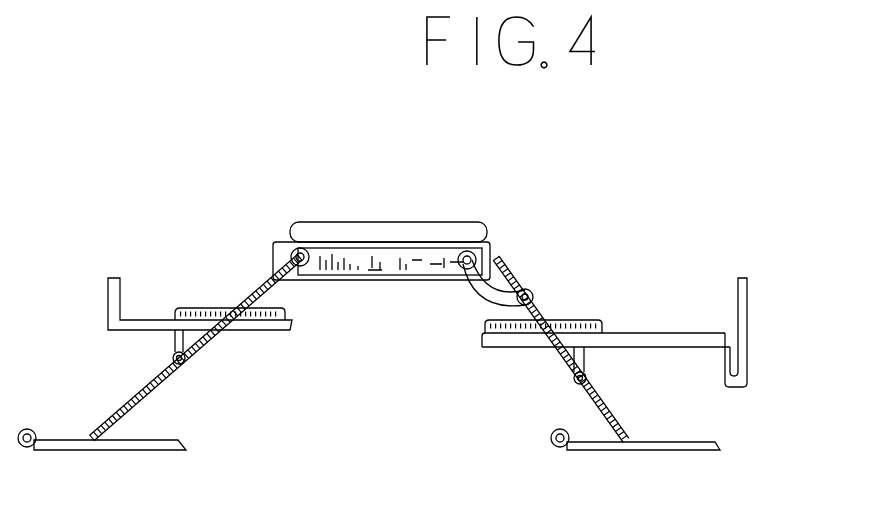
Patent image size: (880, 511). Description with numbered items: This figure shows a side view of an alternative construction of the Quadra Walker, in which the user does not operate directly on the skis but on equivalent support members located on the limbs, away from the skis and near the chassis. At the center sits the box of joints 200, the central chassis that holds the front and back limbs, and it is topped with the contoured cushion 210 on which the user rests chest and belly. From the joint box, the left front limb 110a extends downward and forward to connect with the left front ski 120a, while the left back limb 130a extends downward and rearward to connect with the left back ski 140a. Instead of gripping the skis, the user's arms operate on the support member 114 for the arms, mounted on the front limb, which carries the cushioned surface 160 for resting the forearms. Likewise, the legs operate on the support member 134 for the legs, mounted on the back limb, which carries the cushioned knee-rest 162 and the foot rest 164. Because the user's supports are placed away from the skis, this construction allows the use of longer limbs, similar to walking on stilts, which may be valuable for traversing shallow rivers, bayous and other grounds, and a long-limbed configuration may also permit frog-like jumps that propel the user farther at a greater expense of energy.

The contoured cushion 210 is at (388, 207).
The box of joints 200 is at (381, 278).
The cushioned surface 160 is at (218, 292).
The support member for the arms 114 is at (170, 325).
The left front limb 110a is at (195, 347).
The left front ski 120a is at (102, 455).
The cushioned knee-rest 162 is at (524, 272).
The foot rest 164 is at (688, 298).
The support member for the legs 134 is at (606, 313).
The left back limb 130a is at (543, 349).
The left back ski 140a is at (635, 456).